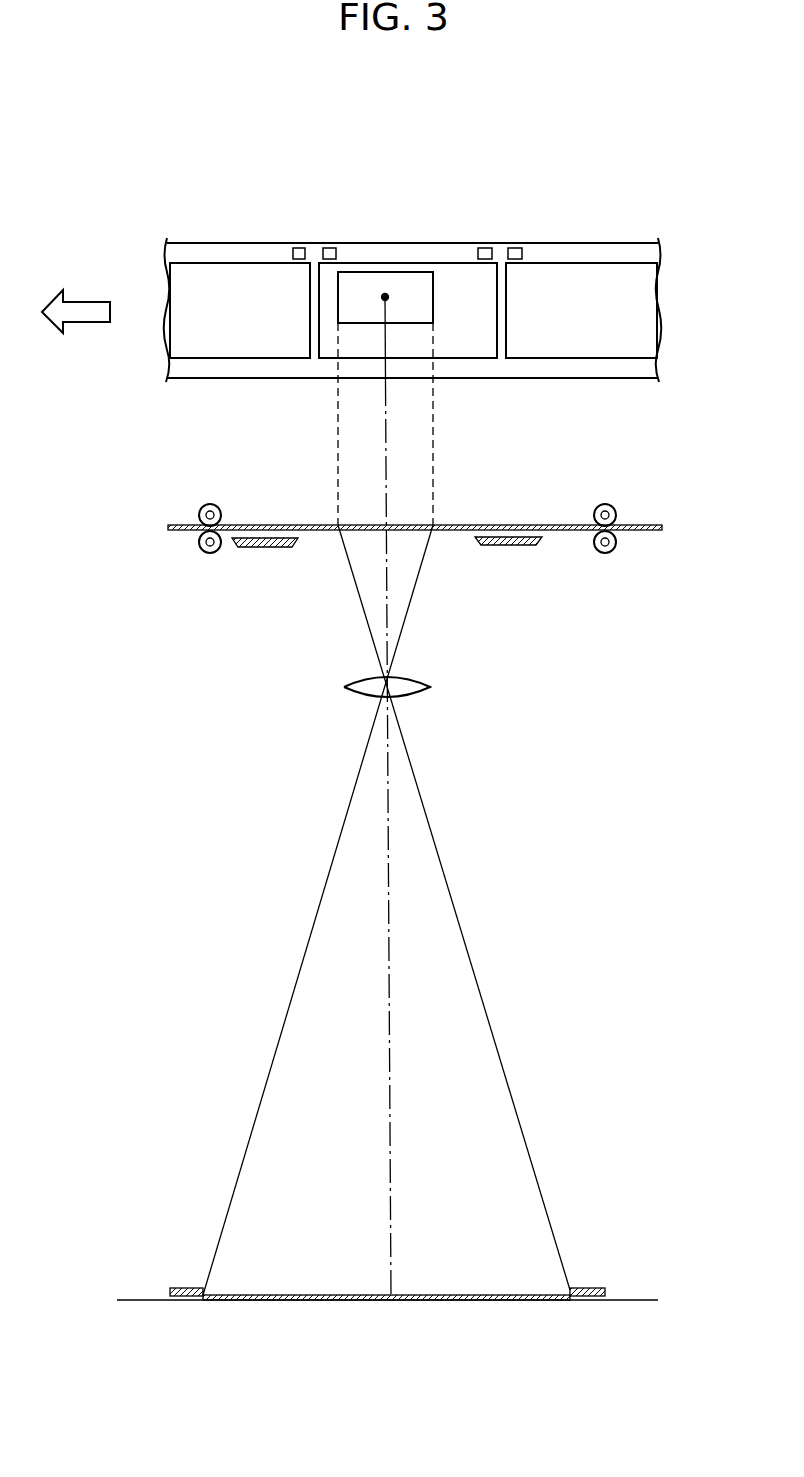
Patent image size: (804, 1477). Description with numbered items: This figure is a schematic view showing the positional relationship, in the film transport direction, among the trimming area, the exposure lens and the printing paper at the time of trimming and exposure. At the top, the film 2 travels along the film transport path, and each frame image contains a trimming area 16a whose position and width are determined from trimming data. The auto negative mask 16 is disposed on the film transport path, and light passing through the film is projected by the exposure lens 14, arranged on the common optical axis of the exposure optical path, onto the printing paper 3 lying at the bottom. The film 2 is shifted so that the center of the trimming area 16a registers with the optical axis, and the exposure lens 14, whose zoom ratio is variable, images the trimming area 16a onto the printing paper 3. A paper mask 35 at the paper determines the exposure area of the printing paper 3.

The film 2 is at (590, 240).
The trimming area 16a is at (413, 288).
The auto negative mask 16 is at (368, 555).
The exposure lens 14 is at (413, 678).
The printing paper 3 is at (353, 1295).
The paper mask 35 is at (592, 1288).